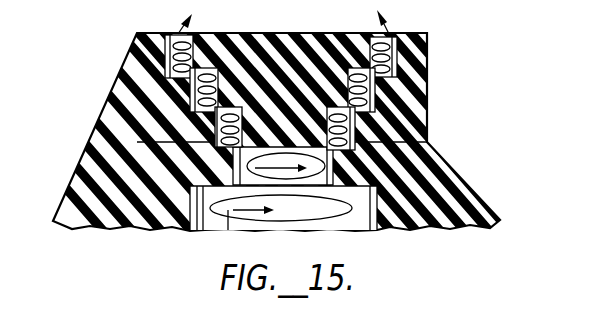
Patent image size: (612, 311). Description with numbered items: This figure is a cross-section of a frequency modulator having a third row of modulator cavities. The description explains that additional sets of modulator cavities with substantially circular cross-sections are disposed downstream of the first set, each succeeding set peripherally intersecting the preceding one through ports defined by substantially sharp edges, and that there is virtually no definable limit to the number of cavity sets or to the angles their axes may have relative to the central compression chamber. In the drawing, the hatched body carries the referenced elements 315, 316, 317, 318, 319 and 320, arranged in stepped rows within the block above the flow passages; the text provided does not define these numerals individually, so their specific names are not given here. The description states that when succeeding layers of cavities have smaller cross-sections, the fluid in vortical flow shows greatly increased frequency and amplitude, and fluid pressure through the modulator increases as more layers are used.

The valve body block 315 is at (138, 144).
The spring-loaded check valve 316 is at (172, 100).
The spring-loaded check valve 317 is at (165, 50).
The spring-loaded check valve 318 is at (417, 140).
The spring-loaded check valve 319 is at (417, 98).
The spring-loaded check valve 320 is at (418, 50).